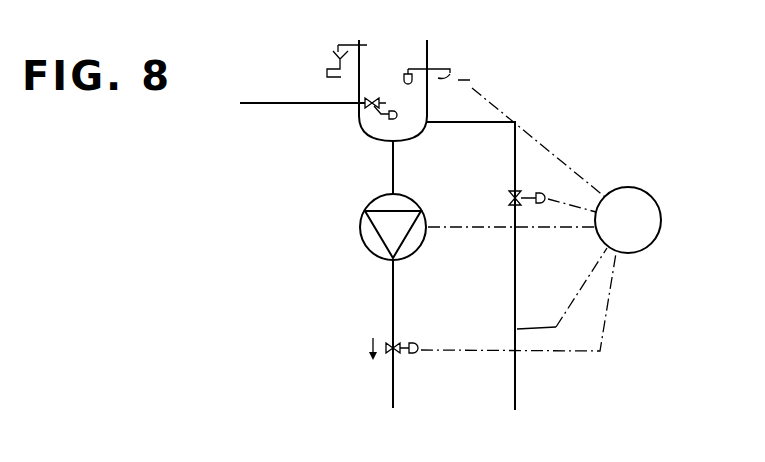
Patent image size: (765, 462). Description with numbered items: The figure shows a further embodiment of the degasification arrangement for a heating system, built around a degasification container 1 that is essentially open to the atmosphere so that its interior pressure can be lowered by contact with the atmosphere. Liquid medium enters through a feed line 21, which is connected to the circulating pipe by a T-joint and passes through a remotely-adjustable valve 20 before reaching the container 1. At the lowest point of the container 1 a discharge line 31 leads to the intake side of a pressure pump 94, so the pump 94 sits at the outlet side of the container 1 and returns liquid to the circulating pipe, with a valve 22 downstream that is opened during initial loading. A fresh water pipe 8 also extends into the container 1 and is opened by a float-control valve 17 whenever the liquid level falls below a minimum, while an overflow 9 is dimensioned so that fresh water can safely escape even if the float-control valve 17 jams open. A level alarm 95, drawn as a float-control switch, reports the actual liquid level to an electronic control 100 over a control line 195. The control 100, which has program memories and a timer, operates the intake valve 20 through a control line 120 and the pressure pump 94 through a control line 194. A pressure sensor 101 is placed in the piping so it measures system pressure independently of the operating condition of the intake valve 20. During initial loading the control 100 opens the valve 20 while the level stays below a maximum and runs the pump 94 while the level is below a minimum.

The degasification container 1 is at (358, 90).
The fresh water pipe 8 is at (266, 103).
The overflow 9 is at (324, 62).
The float-control valve 17 is at (381, 94).
The level alarm 95 is at (439, 65).
The control line 195 is at (563, 143).
The feed line 21 is at (516, 300).
The remotely-adjustable valve 20 is at (520, 188).
The control line 120 is at (548, 199).
The control 100 is at (628, 220).
The control line 194 is at (543, 231).
The pressure pump 94 is at (426, 237).
The discharge line 31 is at (394, 300).
The valve 22 is at (396, 352).
The pressure sensor 101 is at (512, 338).